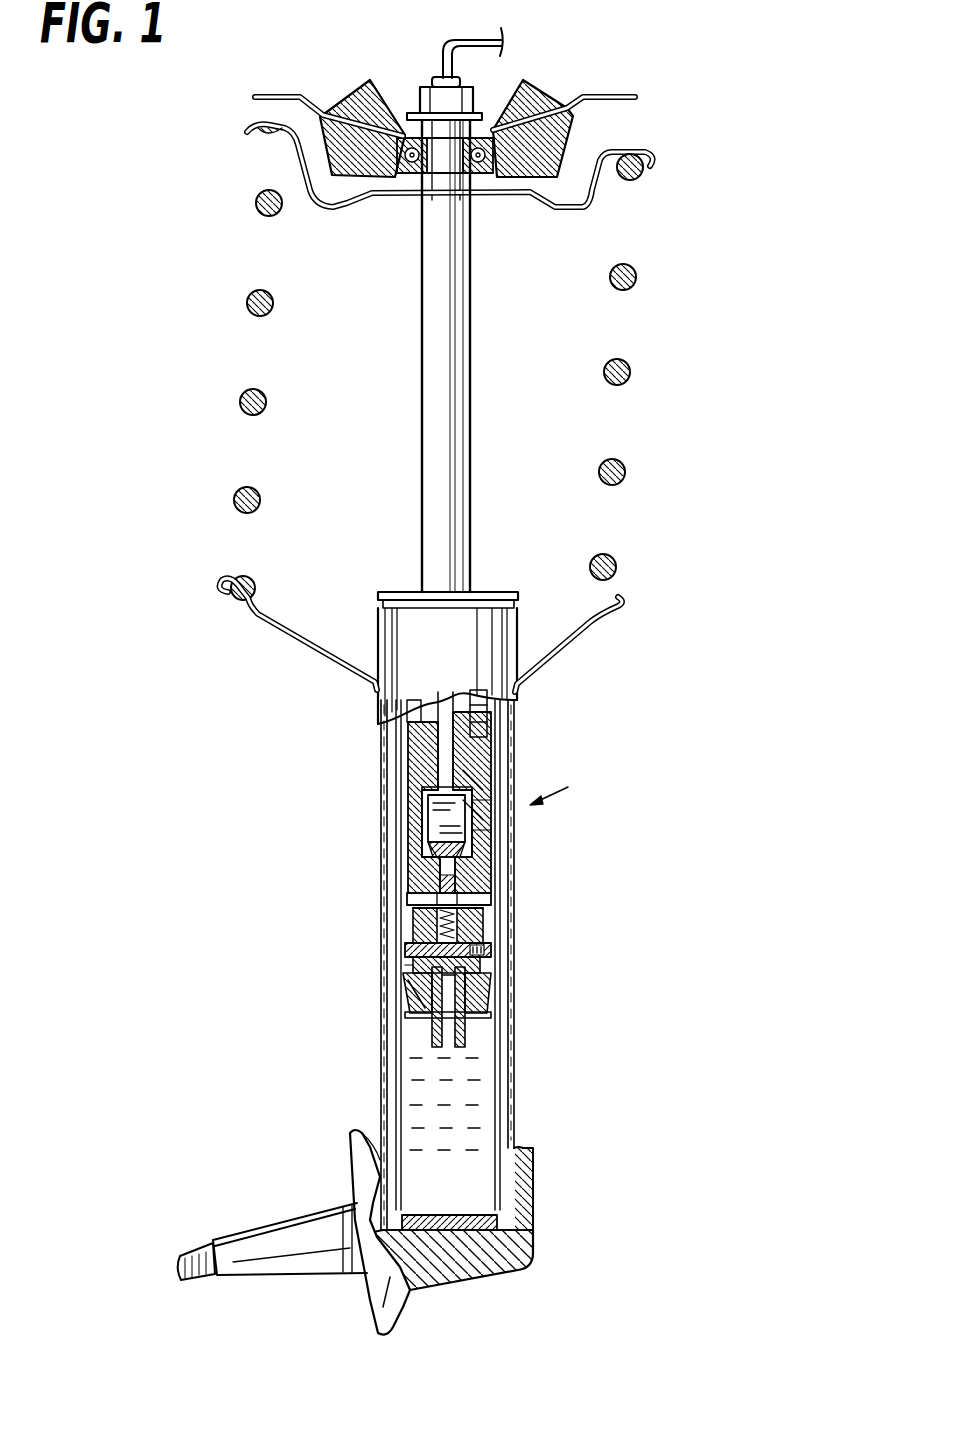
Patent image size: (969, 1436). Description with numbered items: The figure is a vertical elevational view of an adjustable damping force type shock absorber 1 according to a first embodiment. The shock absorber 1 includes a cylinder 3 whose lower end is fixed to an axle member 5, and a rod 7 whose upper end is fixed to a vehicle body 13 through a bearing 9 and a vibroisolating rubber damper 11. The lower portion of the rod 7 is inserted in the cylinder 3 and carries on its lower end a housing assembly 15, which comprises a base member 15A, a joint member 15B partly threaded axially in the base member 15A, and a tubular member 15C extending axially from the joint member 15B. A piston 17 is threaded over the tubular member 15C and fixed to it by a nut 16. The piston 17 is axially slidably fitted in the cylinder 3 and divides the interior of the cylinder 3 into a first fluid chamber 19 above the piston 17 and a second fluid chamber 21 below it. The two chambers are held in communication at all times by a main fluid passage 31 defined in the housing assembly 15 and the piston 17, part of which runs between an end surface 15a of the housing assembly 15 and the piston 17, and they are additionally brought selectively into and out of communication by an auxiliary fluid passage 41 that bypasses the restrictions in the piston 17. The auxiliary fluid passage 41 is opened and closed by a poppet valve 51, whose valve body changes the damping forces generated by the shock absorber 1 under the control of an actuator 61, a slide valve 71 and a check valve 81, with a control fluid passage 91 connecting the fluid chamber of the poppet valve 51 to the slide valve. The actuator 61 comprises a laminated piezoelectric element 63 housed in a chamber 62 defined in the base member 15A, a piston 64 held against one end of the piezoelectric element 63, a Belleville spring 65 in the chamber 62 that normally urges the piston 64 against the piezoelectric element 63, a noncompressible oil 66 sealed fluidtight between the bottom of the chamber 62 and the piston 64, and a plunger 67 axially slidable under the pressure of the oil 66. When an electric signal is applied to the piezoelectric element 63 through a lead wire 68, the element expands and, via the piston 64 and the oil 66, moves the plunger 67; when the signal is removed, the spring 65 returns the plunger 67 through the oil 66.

The shock absorber 1 is at (552, 788).
The cylinder 3 is at (520, 1008).
The axle member 5 is at (258, 1240).
The rod 7 is at (445, 407).
The bearing 9 is at (507, 102).
The vibroisolating rubber damper 11 is at (540, 127).
The vehicle body 13 is at (607, 97).
The housing assembly 15 is at (500, 760).
The base member 15A is at (480, 850).
The joint member 15B is at (480, 918).
The tubular member 15C is at (517, 992).
The end surface 15a is at (408, 977).
The nut 16 is at (520, 1024).
The piston 17 is at (407, 1003).
The first fluid chamber 19 is at (483, 705).
The second fluid chamber 21 is at (480, 1070).
The main fluid passage 31 is at (437, 857).
The auxiliary fluid passage 41 is at (415, 894).
The poppet valve 51 is at (490, 908).
The actuator 61 is at (427, 822).
The chamber 62 is at (433, 815).
The laminated piezoelectric element 63 is at (478, 765).
The piston 64 is at (477, 812).
The Belleville spring 65 is at (503, 857).
The noncompressible oil 66 is at (447, 868).
The plunger 67 is at (508, 892).
The lead wire 68 is at (453, 748).
The slide valve 71 is at (408, 925).
The check valve 81 is at (493, 950).
The control fluid passage 91 is at (417, 948).